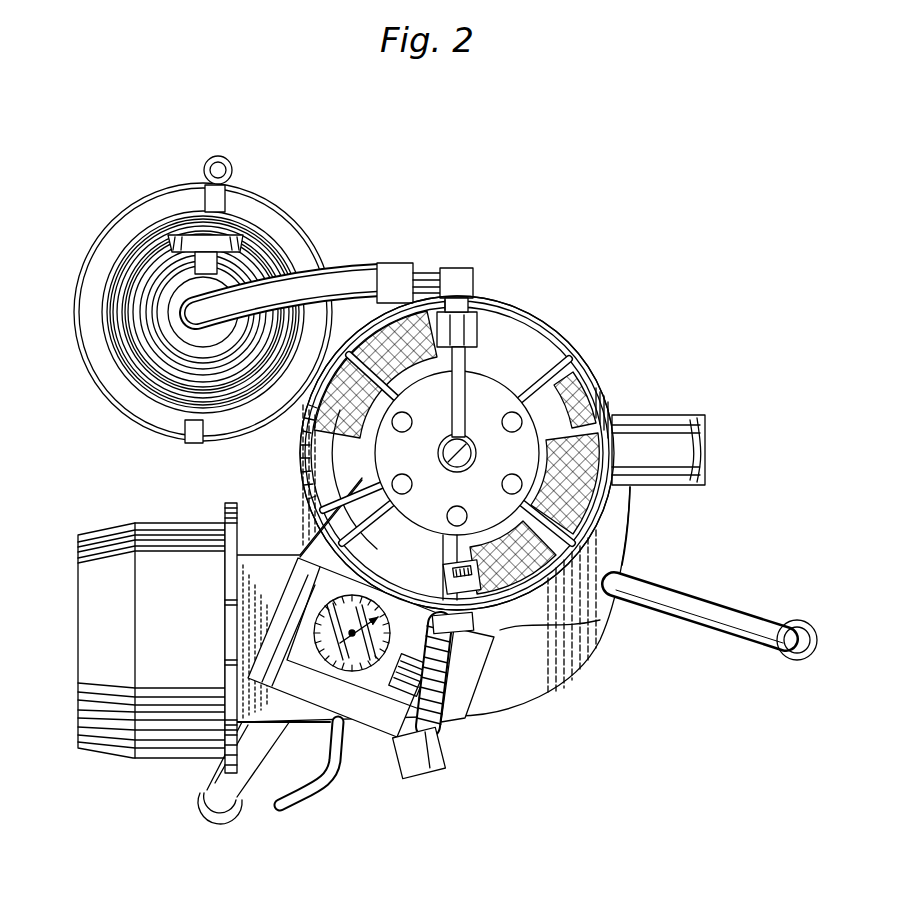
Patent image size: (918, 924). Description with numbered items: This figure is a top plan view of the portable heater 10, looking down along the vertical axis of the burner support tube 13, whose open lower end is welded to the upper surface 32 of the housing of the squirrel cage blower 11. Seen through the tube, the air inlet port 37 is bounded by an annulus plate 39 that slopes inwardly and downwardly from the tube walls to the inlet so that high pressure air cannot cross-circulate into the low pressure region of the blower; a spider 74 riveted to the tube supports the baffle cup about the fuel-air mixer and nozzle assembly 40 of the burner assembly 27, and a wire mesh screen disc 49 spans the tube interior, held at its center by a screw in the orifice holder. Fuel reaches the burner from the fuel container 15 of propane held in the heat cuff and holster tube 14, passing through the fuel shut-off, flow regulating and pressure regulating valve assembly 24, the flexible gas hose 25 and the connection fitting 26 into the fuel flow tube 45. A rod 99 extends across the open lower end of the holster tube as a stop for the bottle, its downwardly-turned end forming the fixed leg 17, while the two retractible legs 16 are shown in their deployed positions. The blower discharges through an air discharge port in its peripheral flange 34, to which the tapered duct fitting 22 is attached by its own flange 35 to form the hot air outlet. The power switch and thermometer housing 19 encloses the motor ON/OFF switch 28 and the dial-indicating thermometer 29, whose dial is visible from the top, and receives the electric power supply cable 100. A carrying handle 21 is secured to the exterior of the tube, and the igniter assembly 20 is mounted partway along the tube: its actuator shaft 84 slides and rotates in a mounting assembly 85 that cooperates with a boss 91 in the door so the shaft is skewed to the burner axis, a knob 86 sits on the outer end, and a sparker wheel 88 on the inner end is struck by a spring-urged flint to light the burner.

The heater 10 is at (628, 238).
The blower 11 is at (515, 675).
The burner support tube 13 is at (447, 436).
The heat cuff and holster tube 14 is at (202, 309).
The fuel container 15 is at (268, 250).
The retractible legs 16 is at (695, 605).
The fixed leg 17 is at (232, 166).
The power switch and thermometer housing 19 is at (363, 722).
The igniter assembly 20 is at (440, 770).
The carrying handle 21 is at (665, 418).
The fitting 22 is at (150, 762).
The valve assembly 24 is at (180, 244).
The flexible gas hose 25 is at (330, 278).
The connection fitting 26 is at (462, 278).
The burner assembly 27 is at (362, 458).
The motor ON/OFF switch 28 is at (382, 705).
The dial-indicating thermometer 29 is at (340, 745).
The upper surface 32 is at (620, 518).
The peripheral flange 34 is at (240, 522).
The flange 35 is at (230, 512).
The air inlet port 37 is at (508, 340).
The annulus plate 39 is at (550, 345).
The fuel-air mixer and nozzle assembly 40 is at (462, 460).
The fuel flow tube 45 is at (470, 362).
The wire mesh screen disc 49 is at (420, 300).
The spider 74 is at (612, 378).
The actuator shaft 84 is at (455, 722).
The mounting assembly 85 is at (545, 662).
The knob 86 is at (420, 782).
The sparker wheel 88 is at (455, 560).
The boss 91 is at (562, 648).
The rod 99 is at (192, 440).
The electric power supply cable 100 is at (295, 800).